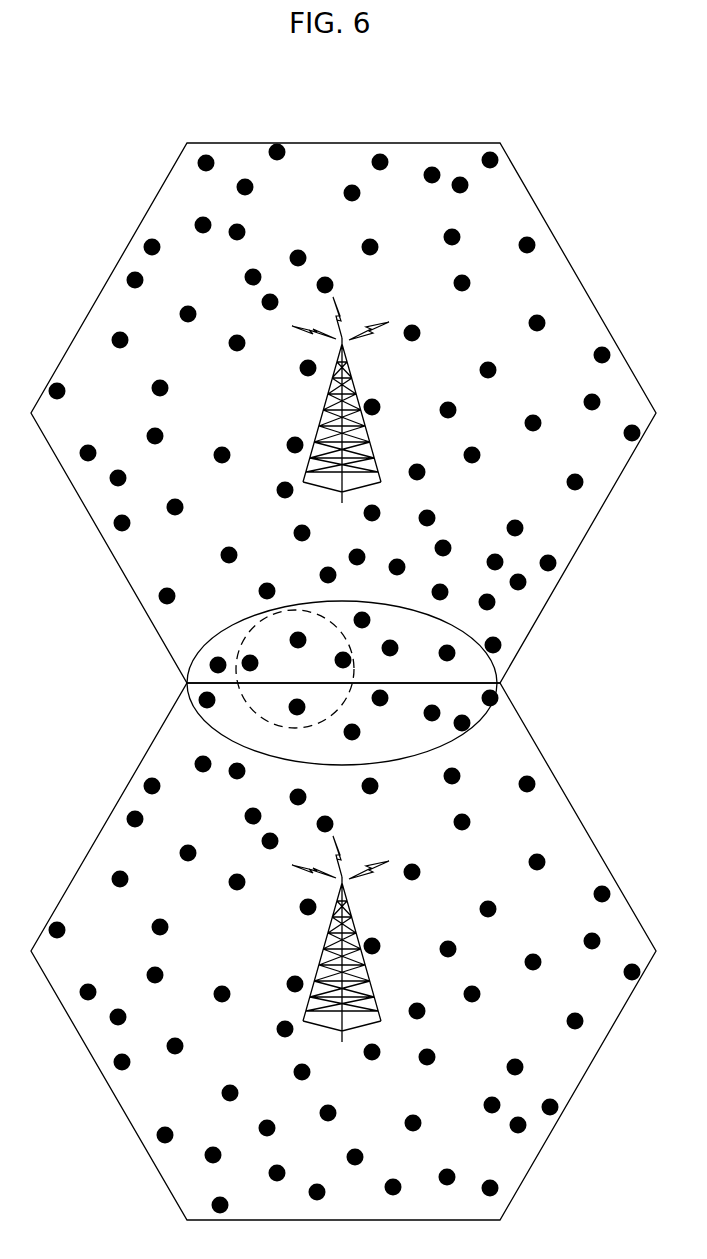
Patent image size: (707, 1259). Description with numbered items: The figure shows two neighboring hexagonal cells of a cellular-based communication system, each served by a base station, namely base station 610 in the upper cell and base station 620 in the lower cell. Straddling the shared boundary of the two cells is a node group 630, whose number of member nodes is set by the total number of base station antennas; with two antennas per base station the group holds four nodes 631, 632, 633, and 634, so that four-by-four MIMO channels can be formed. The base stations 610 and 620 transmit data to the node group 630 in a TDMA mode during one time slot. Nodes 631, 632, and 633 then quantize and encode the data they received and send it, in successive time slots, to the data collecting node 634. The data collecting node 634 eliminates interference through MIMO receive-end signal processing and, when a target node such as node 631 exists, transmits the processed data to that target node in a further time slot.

The base station 610 is at (344, 390).
The base station 620 is at (344, 929).
The node group 630 is at (343, 703).
The node 631 is at (250, 663).
The node 632 is at (298, 640).
The node 633 is at (343, 660).
The data collecting node 634 is at (297, 707).